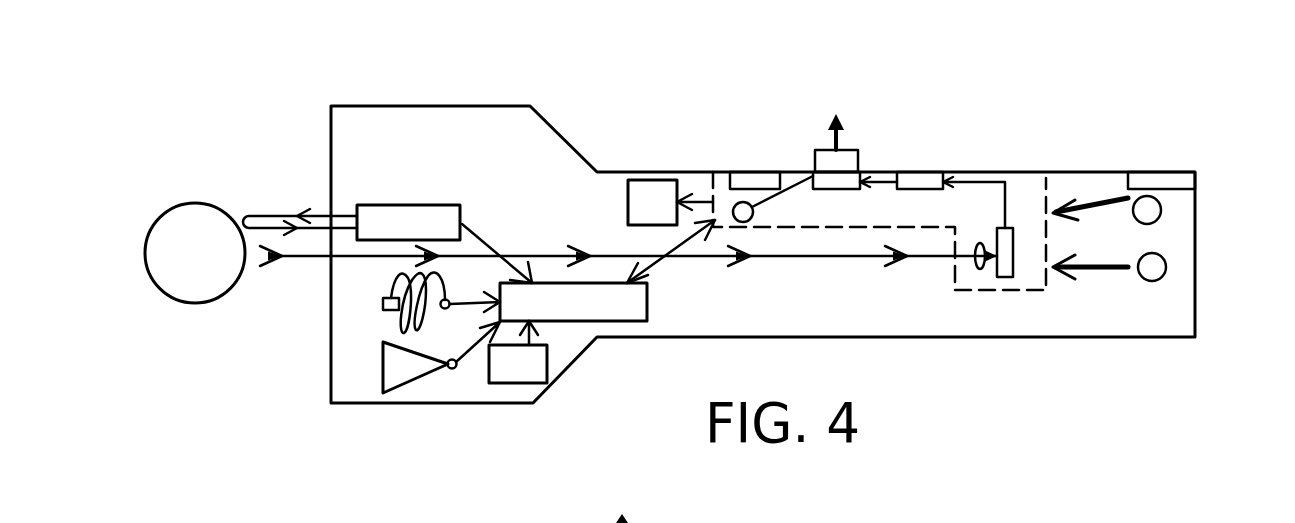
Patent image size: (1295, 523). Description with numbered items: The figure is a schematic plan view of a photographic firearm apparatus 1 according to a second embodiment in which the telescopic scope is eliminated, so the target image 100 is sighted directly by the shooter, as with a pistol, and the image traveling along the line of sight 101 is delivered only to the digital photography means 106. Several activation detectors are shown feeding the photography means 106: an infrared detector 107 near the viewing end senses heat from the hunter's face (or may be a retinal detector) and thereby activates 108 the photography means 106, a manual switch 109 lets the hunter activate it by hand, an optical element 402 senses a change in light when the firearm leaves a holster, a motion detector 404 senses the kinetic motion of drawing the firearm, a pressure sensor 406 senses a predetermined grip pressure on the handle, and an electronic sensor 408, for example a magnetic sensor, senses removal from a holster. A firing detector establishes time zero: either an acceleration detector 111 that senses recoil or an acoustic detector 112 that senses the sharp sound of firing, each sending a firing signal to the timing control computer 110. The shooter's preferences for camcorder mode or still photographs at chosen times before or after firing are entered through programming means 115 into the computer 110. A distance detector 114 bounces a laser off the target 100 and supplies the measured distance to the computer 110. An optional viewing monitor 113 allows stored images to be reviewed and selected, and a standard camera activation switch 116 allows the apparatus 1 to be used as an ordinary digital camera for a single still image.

The photographic firearm apparatus 1 is at (710, 150).
The target image 100 is at (218, 268).
The line of sight 101 is at (710, 257).
The digital photography means 106 is at (898, 222).
The infrared detector 107 is at (1153, 180).
The activation 108 is at (1093, 200).
The manual switch 109 is at (1110, 312).
The timing control computer 110 is at (598, 317).
The acceleration detector 111 is at (410, 308).
The acoustic detector 112 is at (410, 366).
The viewing monitor 113 is at (672, 216).
The distance detector 114 is at (428, 237).
The programming means 115 is at (540, 379).
The camera activation switch 116 is at (1155, 268).
The optical element 402 is at (1147, 210).
The motion detector 404 is at (1147, 210).
The pressure sensor 406 is at (1147, 210).
The electronic sensor 408 is at (1147, 212).